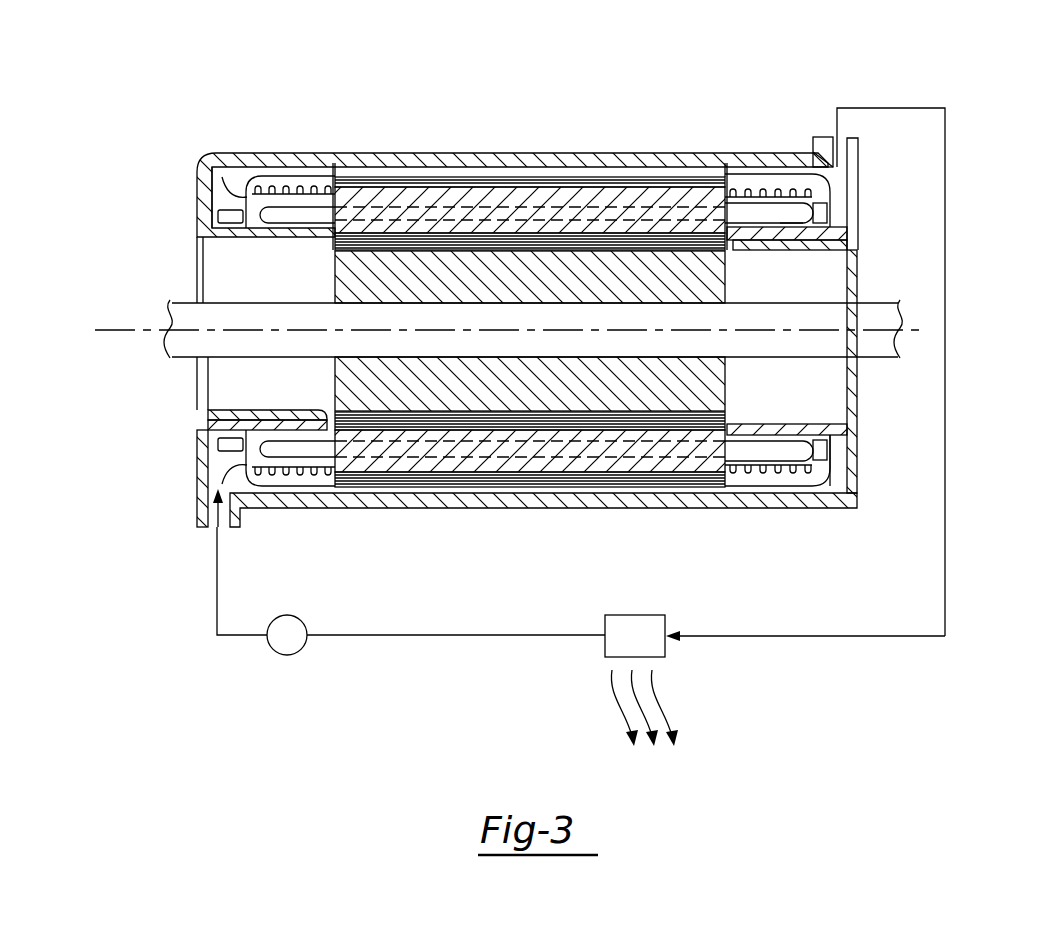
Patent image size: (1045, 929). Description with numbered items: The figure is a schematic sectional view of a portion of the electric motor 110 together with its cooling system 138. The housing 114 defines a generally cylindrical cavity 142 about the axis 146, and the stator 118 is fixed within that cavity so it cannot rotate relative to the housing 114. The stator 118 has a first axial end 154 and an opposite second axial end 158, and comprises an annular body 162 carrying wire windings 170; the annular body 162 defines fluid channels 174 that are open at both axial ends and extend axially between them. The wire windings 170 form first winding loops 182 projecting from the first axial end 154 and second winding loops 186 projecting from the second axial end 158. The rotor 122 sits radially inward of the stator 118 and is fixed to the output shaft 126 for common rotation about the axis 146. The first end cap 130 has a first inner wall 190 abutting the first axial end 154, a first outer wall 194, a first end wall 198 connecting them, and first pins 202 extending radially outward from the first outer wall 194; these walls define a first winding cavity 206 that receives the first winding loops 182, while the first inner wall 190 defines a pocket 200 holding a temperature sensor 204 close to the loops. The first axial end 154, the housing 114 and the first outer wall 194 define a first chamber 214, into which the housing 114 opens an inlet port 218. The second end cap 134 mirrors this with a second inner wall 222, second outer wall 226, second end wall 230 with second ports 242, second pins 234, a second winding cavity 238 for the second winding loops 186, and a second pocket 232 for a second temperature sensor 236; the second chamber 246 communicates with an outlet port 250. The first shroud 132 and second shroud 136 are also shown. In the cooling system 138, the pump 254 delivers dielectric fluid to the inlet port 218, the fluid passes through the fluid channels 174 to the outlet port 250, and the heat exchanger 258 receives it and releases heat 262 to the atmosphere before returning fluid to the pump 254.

The electric motor 110 is at (286, 58).
The housing 114 is at (516, 165).
The stator 118 is at (563, 165).
The rotor 122 is at (668, 378).
The output shaft 126 is at (172, 345).
The first end cap 130 is at (226, 436).
The first shroud 132 is at (224, 175).
The second end cap 134 is at (860, 256).
The second shroud 136 is at (795, 492).
The cooling system 138 is at (512, 427).
The cylindrical cavity 142 is at (775, 175).
The axis 146 is at (118, 330).
The first axial end 154 is at (330, 165).
The second axial end 158 is at (730, 170).
The annular body 162 is at (538, 500).
The wire windings 170 is at (436, 462).
The fluid channels 174 is at (442, 176).
The first winding loops 182 is at (240, 232).
The second winding loops 186 is at (800, 210).
The first inner wall 190 is at (292, 240).
The first outer wall 194 is at (258, 188).
The first end wall 198 is at (232, 458).
The pocket 200 is at (212, 425).
The first pins 202 is at (268, 480).
The temperature sensor 204 is at (262, 425).
The first winding cavity 206 is at (256, 447).
The first chamber 214 is at (220, 175).
The inlet port 218 is at (212, 528).
The second inner wall 222 is at (780, 428).
The second outer wall 226 is at (775, 486).
The second end wall 230 is at (812, 452).
The second pocket 232 is at (822, 250).
The second pins 234 is at (828, 145).
The second temperature sensor 236 is at (806, 242).
The second winding cavity 238 is at (793, 225).
The second ports 242 is at (838, 213).
The second chamber 246 is at (773, 185).
The outlet port 250 is at (852, 140).
The pump 254 is at (272, 650).
The heat exchanger 258 is at (665, 650).
The heat 262 is at (617, 712).